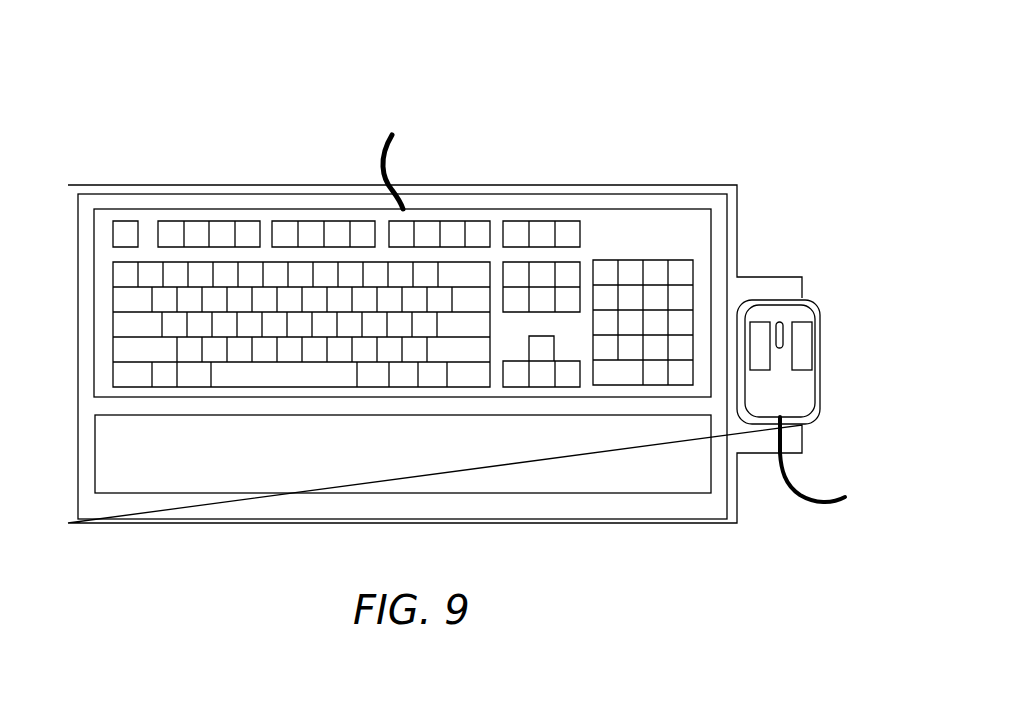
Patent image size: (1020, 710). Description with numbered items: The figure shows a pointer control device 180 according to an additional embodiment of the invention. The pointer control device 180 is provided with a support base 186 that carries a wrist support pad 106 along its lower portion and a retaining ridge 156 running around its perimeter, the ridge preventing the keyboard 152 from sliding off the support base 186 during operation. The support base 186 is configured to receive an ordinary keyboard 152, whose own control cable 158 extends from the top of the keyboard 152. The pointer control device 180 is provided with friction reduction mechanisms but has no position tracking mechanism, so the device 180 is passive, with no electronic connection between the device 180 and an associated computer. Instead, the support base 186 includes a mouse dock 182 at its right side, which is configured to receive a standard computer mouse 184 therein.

The pointer control device 180 is at (135, 96).
The retaining ridge 156 is at (73, 206).
The support base 186 is at (83, 307).
The keyboard 152 is at (620, 227).
The control cable 158 is at (393, 152).
The wrist support pad 106 is at (170, 477).
The mouse dock 182 is at (798, 256).
The computer mouse 184 is at (808, 392).